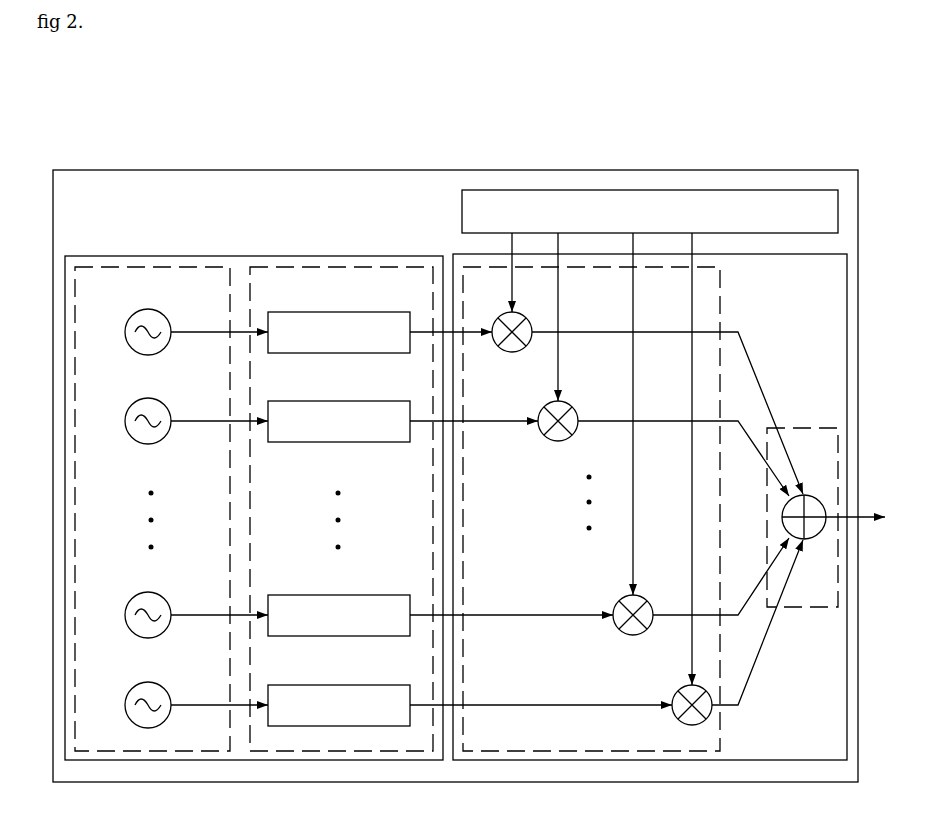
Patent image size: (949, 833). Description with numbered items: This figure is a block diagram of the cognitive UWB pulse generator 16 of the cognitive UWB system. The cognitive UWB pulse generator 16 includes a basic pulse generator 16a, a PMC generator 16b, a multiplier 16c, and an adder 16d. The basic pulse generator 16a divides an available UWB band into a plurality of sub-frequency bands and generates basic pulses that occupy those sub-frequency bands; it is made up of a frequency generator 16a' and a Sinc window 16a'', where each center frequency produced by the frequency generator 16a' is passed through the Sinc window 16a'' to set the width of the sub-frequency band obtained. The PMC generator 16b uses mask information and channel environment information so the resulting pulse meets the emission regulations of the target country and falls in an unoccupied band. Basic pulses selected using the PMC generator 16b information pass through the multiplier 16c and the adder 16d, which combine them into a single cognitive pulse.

The cognitive UWB pulse generator 16 is at (776, 133).
The basic pulse generator 16a is at (254, 515).
The frequency generator 16a' is at (152, 549).
The Sinc window 16a'' is at (302, 549).
The PMC generator 16b is at (632, 190).
The multiplier 16c is at (572, 751).
The adder 16d is at (812, 607).